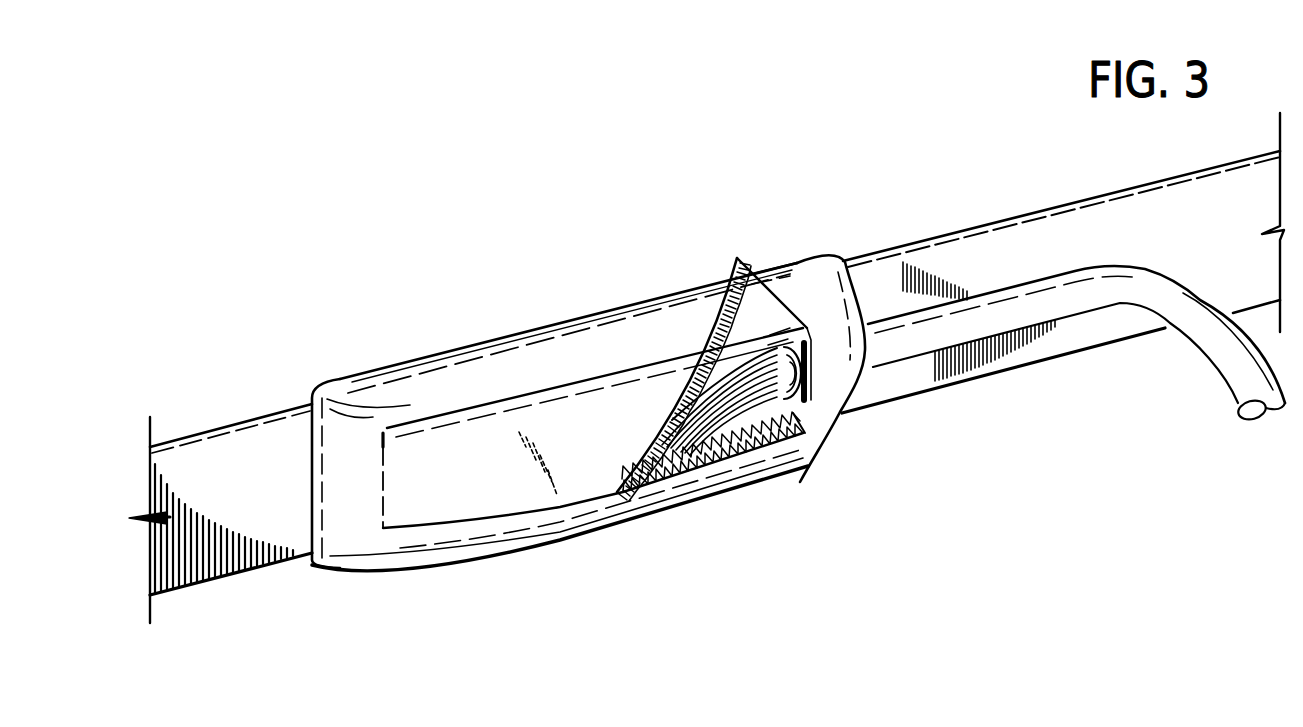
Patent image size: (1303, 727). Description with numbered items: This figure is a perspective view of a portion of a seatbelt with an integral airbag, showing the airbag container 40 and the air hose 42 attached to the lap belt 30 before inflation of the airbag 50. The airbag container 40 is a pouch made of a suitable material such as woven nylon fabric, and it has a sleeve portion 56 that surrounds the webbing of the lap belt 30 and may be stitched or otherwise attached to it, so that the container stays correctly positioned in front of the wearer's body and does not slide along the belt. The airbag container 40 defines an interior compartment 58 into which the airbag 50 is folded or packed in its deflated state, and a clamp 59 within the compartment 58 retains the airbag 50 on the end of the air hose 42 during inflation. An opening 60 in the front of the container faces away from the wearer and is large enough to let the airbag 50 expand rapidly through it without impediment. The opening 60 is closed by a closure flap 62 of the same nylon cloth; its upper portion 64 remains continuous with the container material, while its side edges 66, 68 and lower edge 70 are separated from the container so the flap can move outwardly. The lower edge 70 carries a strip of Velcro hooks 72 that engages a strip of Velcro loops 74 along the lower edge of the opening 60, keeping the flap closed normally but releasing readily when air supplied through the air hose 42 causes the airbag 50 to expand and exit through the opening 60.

The lap belt 30 is at (933, 254).
The airbag container 40 is at (423, 385).
The air hose 42 is at (1036, 310).
The airbag 50 is at (757, 445).
The sleeve portion 56 is at (308, 398).
The interior compartment 58 is at (808, 393).
The clamp 59 is at (808, 368).
The opening 60 is at (700, 420).
The closure flap 62 is at (535, 505).
The upper portion 64 is at (563, 405).
The side edge 66 is at (382, 497).
The side edge 68 is at (773, 289).
The lower edge 70 is at (590, 500).
The strip of Velcro hooks 72 is at (745, 278).
The strip of Velcro loops 74 is at (785, 433).